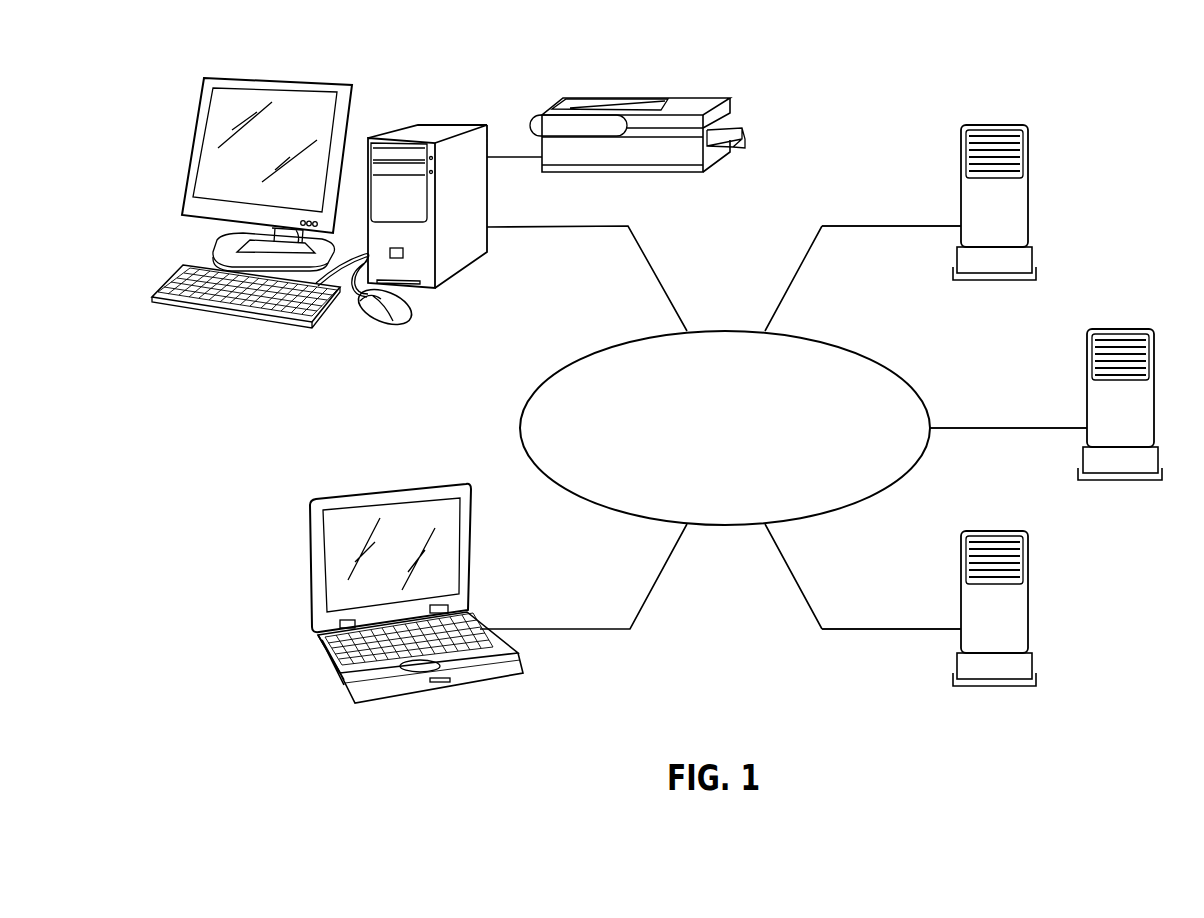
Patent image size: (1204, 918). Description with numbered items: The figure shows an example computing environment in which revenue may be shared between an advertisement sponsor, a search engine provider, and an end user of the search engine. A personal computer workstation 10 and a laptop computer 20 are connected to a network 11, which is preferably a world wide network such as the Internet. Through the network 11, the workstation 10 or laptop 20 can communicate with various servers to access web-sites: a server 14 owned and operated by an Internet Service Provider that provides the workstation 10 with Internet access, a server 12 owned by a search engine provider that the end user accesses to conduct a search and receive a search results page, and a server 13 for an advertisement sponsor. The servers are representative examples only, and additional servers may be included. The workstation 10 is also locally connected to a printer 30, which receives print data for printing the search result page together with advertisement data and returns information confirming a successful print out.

The personal computer workstation 10 is at (223, 77).
The network 11 is at (833, 343).
The search engine provider server 12 is at (1028, 153).
The advertisement sponsor server 13 is at (1028, 563).
The Internet Service Provider server 14 is at (1152, 358).
The laptop computer 20 is at (330, 497).
The printer 30 is at (702, 97).